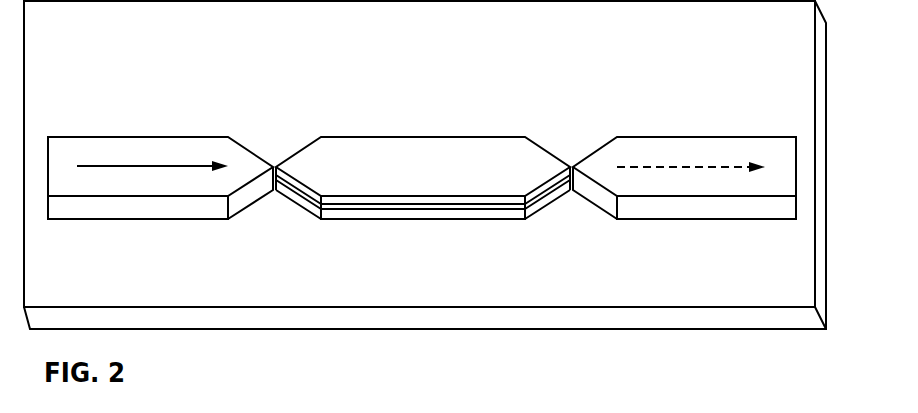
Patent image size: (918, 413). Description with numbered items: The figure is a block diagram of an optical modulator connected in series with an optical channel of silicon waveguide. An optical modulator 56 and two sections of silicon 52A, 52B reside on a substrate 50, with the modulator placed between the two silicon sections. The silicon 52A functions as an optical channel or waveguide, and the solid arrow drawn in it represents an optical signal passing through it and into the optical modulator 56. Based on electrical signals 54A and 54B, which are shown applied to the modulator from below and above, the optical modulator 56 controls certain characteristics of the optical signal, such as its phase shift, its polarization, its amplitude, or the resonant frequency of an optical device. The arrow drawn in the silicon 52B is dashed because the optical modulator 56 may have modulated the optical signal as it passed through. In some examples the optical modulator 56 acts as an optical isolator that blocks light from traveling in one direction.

The substrate 50 is at (487, 34).
The silicon 52A is at (182, 95).
The silicon 52B is at (762, 93).
The electrical signal 54A is at (379, 234).
The electrical signal 54B is at (379, 137).
The optical modulator 56 is at (472, 220).